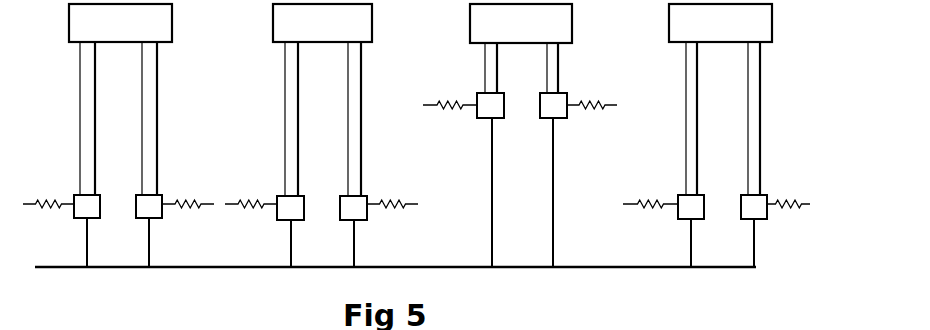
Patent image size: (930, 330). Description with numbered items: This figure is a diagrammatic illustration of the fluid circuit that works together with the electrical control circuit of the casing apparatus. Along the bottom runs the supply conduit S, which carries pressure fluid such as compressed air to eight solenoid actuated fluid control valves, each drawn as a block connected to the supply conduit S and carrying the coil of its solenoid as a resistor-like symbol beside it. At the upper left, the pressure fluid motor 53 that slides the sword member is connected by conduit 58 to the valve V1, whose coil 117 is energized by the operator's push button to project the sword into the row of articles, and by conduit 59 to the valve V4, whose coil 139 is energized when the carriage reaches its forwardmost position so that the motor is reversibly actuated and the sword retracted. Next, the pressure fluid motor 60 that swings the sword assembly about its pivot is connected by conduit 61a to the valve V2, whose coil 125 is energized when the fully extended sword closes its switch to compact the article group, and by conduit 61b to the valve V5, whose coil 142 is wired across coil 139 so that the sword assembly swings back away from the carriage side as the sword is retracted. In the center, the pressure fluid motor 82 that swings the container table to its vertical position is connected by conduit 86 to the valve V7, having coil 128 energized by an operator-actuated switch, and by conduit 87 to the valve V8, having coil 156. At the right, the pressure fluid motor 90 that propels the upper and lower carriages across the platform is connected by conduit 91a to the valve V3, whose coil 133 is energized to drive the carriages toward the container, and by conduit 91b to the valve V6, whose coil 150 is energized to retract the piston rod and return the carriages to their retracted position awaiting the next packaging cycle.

The pressure fluid motor 53 is at (131, 32).
The conduit 58 is at (91, 102).
The conduit 59 is at (158, 100).
The pressure fluid motor 60 is at (332, 32).
The conduit 61a is at (294, 108).
The conduit 61b is at (357, 108).
The pressure fluid motor 82 is at (530, 32).
The conduit 86 is at (497, 70).
The conduit 87 is at (559, 73).
The pressure fluid motor 90 is at (731, 32).
The conduit 91a is at (693, 78).
The conduit 91b is at (756, 84).
The solenoid coil 117 is at (68, 203).
The solenoid coil 139 is at (207, 204).
The solenoid coil 125 is at (270, 204).
The solenoid coil 142 is at (400, 204).
The solenoid coil 128 is at (464, 105).
The solenoid coil 156 is at (614, 105).
The solenoid coil 133 is at (662, 203).
The solenoid coil 150 is at (798, 203).
The solenoid actuated fluid control valve V1 is at (98, 213).
The solenoid actuated fluid control valve V2 is at (294, 212).
The solenoid actuated fluid control valve V3 is at (696, 212).
The solenoid actuated fluid control valve V4 is at (160, 213).
The solenoid actuated fluid control valve V5 is at (358, 210).
The solenoid actuated fluid control valve V6 is at (758, 212).
The solenoid operated fluid control valve V7 is at (496, 116).
The solenoid operated fluid control valve V8 is at (558, 116).
The supply conduit S is at (55, 268).